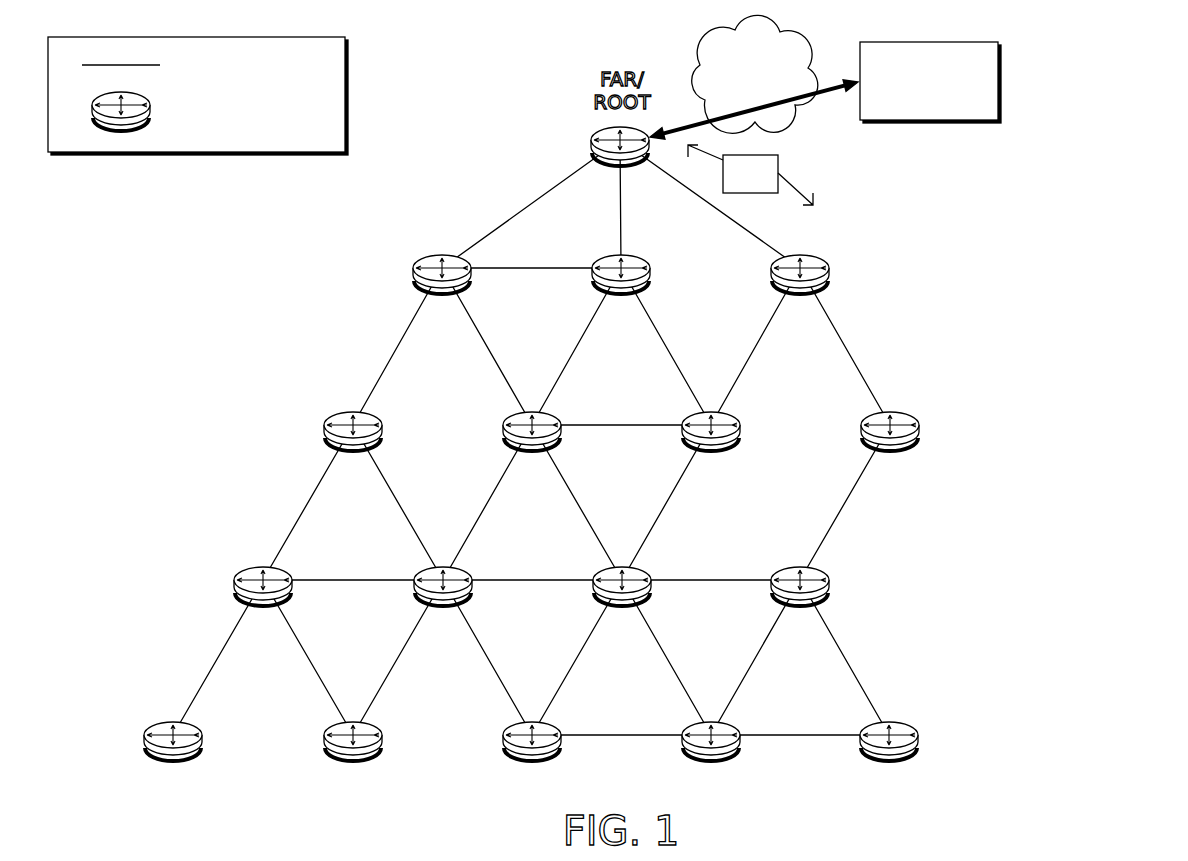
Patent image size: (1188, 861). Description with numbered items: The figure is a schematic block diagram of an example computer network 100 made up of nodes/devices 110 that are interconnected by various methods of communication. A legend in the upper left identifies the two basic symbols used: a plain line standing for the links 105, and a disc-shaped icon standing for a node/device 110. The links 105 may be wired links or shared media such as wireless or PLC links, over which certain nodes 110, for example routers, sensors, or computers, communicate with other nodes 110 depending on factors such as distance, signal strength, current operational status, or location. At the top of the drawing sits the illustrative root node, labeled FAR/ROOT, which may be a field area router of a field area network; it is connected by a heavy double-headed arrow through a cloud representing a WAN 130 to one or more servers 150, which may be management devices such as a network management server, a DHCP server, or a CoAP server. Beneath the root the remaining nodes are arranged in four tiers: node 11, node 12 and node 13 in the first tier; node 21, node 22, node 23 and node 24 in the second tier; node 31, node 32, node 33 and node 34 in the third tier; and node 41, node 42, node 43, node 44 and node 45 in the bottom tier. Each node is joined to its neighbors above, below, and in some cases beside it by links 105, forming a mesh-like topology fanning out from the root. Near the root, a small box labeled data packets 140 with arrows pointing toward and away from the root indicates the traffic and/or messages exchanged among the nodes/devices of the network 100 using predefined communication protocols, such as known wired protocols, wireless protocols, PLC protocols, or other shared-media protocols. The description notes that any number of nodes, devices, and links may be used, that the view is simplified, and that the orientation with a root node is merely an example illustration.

The computer network 100 is at (1106, 93).
The links 105 is at (469, 386).
The nodes/devices 110 is at (201, 111).
The WAN 130 is at (733, 97).
The data packets 140 is at (733, 187).
The servers 150 is at (911, 104).
The node 11 is at (442, 295).
The node 12 is at (621, 295).
The node 13 is at (800, 295).
The node 21 is at (353, 449).
The node 22 is at (532, 449).
The node 23 is at (711, 449).
The node 24 is at (890, 449).
The node 31 is at (263, 605).
The node 32 is at (443, 605).
The node 33 is at (622, 605).
The node 34 is at (800, 605).
The node 41 is at (173, 760).
The node 42 is at (353, 760).
The node 43 is at (532, 760).
The node 44 is at (711, 760).
The node 45 is at (889, 760).